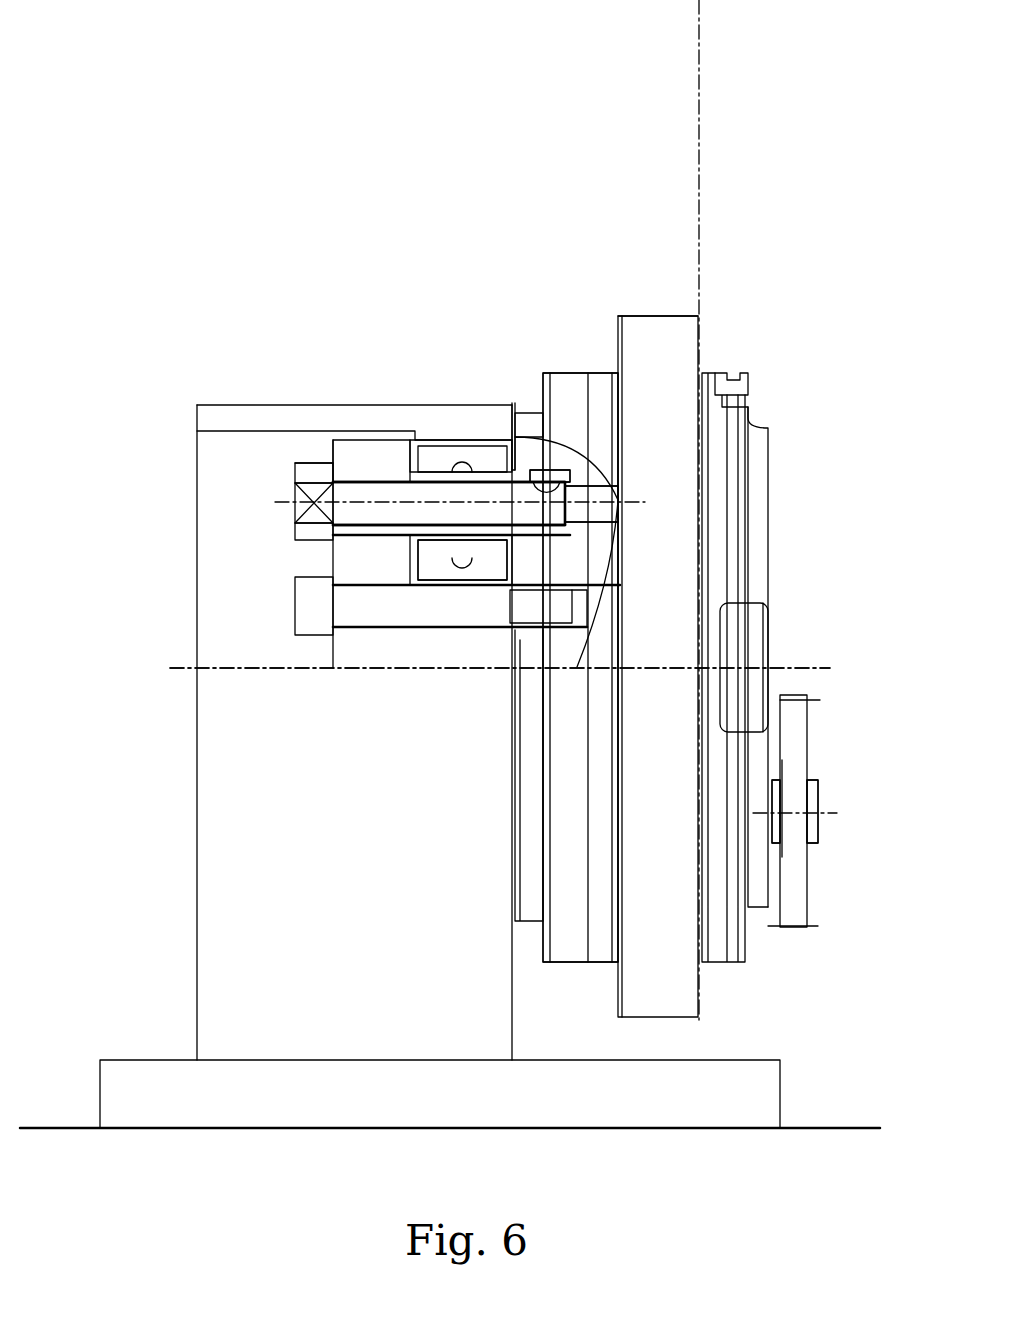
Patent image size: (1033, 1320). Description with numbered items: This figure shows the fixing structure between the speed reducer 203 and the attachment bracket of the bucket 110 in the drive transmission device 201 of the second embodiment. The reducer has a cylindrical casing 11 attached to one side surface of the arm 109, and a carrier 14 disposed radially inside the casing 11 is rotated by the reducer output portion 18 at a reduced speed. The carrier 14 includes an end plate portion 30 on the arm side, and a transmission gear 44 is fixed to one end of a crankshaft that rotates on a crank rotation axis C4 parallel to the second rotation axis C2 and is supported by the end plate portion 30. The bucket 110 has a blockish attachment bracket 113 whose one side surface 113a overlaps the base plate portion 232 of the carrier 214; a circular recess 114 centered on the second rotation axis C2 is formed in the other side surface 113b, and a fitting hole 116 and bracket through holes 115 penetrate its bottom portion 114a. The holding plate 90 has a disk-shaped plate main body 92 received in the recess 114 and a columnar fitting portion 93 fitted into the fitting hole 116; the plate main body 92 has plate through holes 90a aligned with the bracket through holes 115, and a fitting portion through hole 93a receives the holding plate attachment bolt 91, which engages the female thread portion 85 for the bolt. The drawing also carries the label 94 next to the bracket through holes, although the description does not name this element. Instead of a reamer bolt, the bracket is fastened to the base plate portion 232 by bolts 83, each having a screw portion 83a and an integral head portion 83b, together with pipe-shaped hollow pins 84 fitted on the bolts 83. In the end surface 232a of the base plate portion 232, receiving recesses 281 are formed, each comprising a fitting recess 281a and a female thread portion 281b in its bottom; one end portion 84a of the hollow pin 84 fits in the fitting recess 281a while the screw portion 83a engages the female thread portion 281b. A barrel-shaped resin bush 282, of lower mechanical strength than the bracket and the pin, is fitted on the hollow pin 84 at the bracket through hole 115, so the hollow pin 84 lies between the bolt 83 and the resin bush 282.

The arm 109 is at (695, 66).
The drive transmission device 201 is at (569, 200).
The receiving recess 281 is at (695, 242).
The fitting recess 281a is at (567, 472).
The female thread portion 281b is at (625, 493).
The base plate portion 232 is at (545, 376).
The carrier 214 is at (510, 843).
The speed reducer 203 is at (677, 288).
The casing 11 is at (682, 313).
The holding plate 90 is at (420, 305).
The plate main body 92 is at (385, 445).
The fitting portion 93 is at (430, 450).
The bucket 110 is at (205, 400).
The attachment bracket 113 is at (265, 405).
The end surface 232a is at (517, 437).
The head portion 83b is at (315, 463).
The bolt 83 is at (358, 473).
The bearing ring 94 is at (440, 472).
The bracket through hole 115 is at (455, 465).
The other side surface 113b is at (197, 430).
The carrier 14 is at (764, 409).
The recess 114 is at (200, 450).
The end plate portion 30 is at (770, 520).
The screw portion 83a is at (560, 520).
The one end portion 84a is at (570, 605).
The second rotation axis C2 is at (815, 665).
The plate through hole 90a is at (345, 520).
The bottom portion 114a is at (333, 600).
The fitting portion through hole 93a is at (400, 575).
The resin bush 282 is at (440, 560).
The female thread portion for the bolt 85 is at (505, 610).
The hollow pin 84 is at (552, 630).
The holding plate attachment bolt 91 is at (420, 600).
The fitting hole 116 is at (470, 575).
The transmission gear 44 is at (810, 705).
The crank rotation axis C4 is at (825, 805).
The reducer output portion 18 is at (829, 898).
The one side surface 113a is at (515, 985).